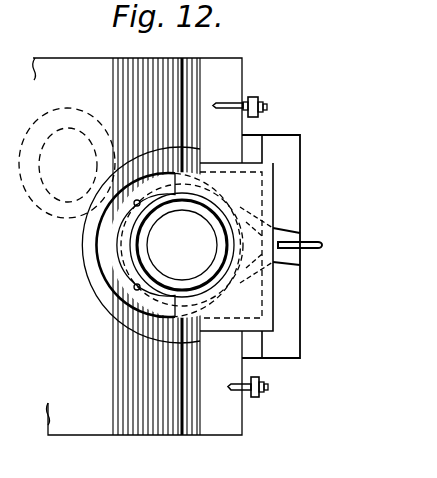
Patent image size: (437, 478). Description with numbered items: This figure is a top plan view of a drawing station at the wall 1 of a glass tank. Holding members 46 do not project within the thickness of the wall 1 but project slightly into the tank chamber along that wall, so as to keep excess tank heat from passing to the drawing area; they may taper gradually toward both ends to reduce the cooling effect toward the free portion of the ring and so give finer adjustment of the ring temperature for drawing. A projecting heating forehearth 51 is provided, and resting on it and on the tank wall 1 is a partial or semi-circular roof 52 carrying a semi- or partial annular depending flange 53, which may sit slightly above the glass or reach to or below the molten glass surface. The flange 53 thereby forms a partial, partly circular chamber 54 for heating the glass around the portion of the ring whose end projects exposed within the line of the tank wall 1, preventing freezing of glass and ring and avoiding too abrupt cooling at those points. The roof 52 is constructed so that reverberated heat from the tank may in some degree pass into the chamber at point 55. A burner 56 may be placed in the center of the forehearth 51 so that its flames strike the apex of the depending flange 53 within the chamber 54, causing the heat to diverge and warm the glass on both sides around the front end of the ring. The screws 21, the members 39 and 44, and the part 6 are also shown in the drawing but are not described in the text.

The wall 1 is at (232, 82).
The screw 21 is at (286, 397).
The screw 39 is at (135, 289).
The hub 44 is at (212, 217).
The holding members 46 is at (123, 277).
The plate 6 is at (92, 247).
The heating forehearth 51 is at (298, 192).
The partial roof 52 is at (267, 178).
The depending flange 53 is at (275, 260).
The chamber 54 is at (282, 253).
The point 55 is at (236, 245).
The burner 56 is at (312, 243).